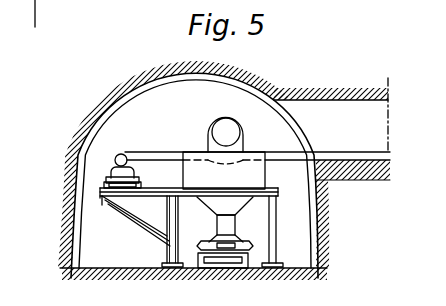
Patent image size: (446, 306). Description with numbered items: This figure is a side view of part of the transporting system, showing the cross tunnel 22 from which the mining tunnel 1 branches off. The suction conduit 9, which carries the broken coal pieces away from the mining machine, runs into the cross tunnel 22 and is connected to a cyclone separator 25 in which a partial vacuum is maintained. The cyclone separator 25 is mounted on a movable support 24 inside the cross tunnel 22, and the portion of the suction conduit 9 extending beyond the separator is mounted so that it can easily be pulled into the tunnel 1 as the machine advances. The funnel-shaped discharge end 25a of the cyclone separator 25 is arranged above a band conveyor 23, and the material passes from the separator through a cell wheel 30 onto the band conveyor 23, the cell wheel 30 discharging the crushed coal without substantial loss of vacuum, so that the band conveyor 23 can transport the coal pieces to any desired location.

The tunnel 1 is at (375, 133).
The suction conduit 9 is at (141, 161).
The cross tunnel 22 is at (107, 132).
The band conveyor 23 is at (249, 247).
The movable support 24 is at (276, 196).
The cyclone separator 25 is at (246, 172).
The funnel-shaped discharge end 25a is at (240, 205).
The cell wheel 30 is at (205, 226).